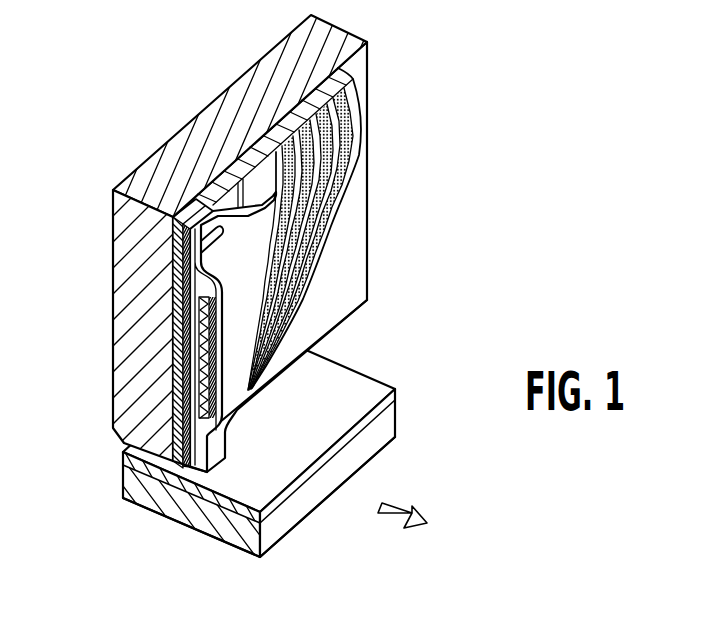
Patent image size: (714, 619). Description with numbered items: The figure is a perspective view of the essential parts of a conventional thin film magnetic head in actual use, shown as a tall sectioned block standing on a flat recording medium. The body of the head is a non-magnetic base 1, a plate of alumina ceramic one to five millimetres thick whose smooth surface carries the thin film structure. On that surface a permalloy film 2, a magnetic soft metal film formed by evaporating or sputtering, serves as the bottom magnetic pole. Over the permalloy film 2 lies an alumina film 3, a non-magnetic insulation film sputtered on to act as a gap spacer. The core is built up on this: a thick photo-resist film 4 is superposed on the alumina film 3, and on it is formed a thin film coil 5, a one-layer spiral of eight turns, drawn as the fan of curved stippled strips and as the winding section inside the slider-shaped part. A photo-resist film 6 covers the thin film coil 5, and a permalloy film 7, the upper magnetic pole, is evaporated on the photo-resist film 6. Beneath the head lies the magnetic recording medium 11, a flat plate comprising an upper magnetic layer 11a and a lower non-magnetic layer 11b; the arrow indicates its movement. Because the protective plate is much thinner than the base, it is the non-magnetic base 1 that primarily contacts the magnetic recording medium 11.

The non-magnetic base substance 1 is at (253, 62).
The permalloy film 2 is at (188, 258).
The alumina film 3 is at (180, 332).
The thick photo-resist film 4 is at (346, 77).
The thin film coil 5 is at (342, 136).
The photo-resist film 6 is at (200, 412).
The permalloy film 7 is at (198, 468).
The magnetic recording medium 11 is at (373, 368).
The magnetic layer 11a is at (396, 395).
The non-magnetic layer 11b is at (388, 428).